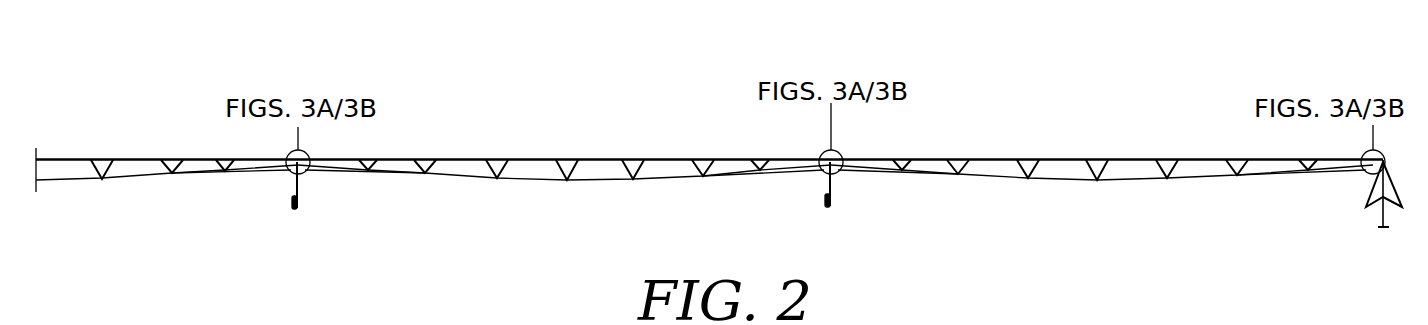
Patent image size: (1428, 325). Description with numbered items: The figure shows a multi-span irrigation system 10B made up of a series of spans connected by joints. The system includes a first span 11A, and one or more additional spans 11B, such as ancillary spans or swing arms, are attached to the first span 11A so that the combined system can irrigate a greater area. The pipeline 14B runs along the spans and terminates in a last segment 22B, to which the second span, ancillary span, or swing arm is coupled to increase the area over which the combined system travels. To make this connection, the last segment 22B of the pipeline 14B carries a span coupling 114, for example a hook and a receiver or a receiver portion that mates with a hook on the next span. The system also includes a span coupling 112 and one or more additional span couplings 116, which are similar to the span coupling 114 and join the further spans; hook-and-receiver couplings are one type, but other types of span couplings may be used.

The irrigation system 10B is at (1313, 58).
The first span 11A is at (1097, 118).
The additional span 11B is at (563, 118).
The pipeline 14B is at (1005, 160).
The last segment 22B is at (850, 160).
The span coupling 112 is at (1361, 174).
The span coupling 114 is at (840, 176).
The additional span coupling 116 is at (312, 175).